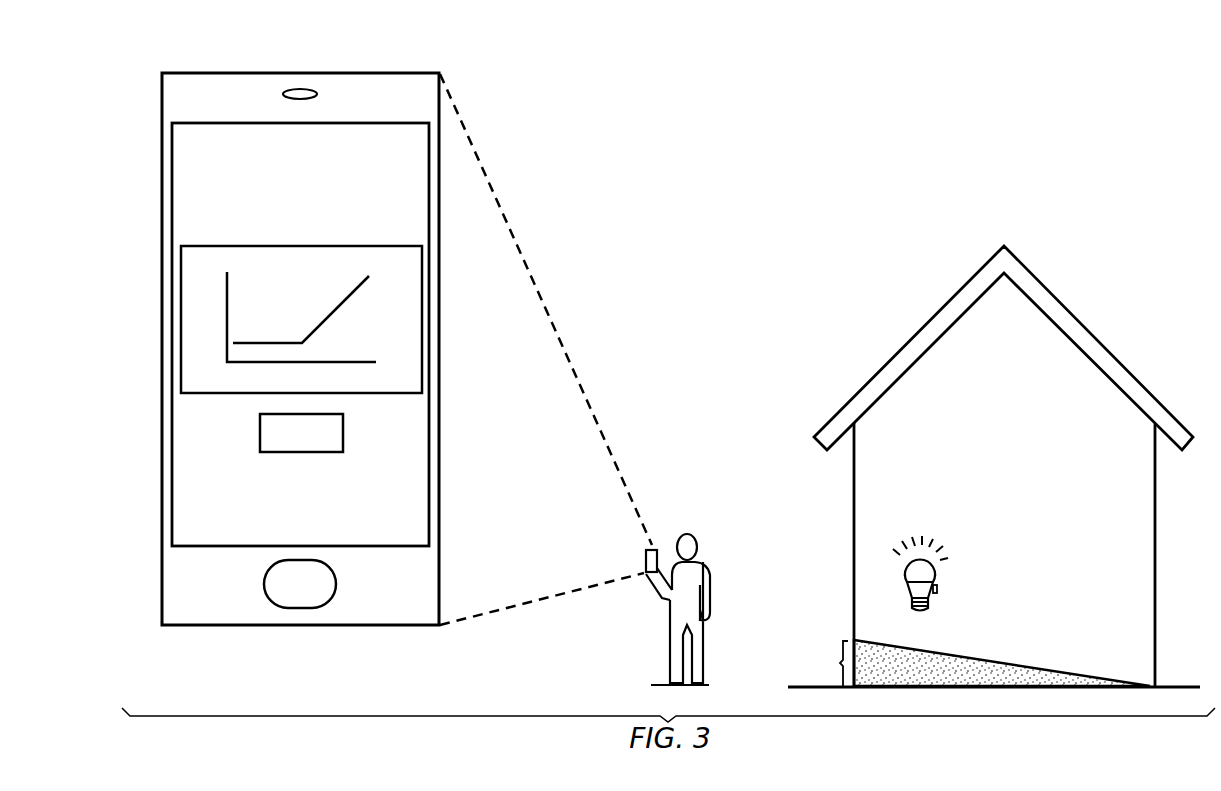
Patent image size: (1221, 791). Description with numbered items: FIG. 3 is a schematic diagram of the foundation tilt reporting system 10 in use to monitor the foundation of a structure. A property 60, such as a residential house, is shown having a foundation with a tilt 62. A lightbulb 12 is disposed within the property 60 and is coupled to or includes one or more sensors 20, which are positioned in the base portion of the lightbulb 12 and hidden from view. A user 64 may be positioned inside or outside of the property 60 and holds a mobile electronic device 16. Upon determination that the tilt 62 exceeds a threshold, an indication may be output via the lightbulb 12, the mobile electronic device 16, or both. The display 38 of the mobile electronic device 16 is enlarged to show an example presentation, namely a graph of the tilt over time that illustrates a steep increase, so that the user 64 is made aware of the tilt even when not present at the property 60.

The foundation tilt reporting system 10 is at (857, 99).
The lightbulb 12 is at (938, 575).
The mobile electronic device 16 is at (647, 554).
The sensors 20 is at (938, 590).
The display 38 is at (172, 333).
The property 60 is at (1086, 327).
The tilt 62 is at (838, 663).
The user 64 is at (691, 535).